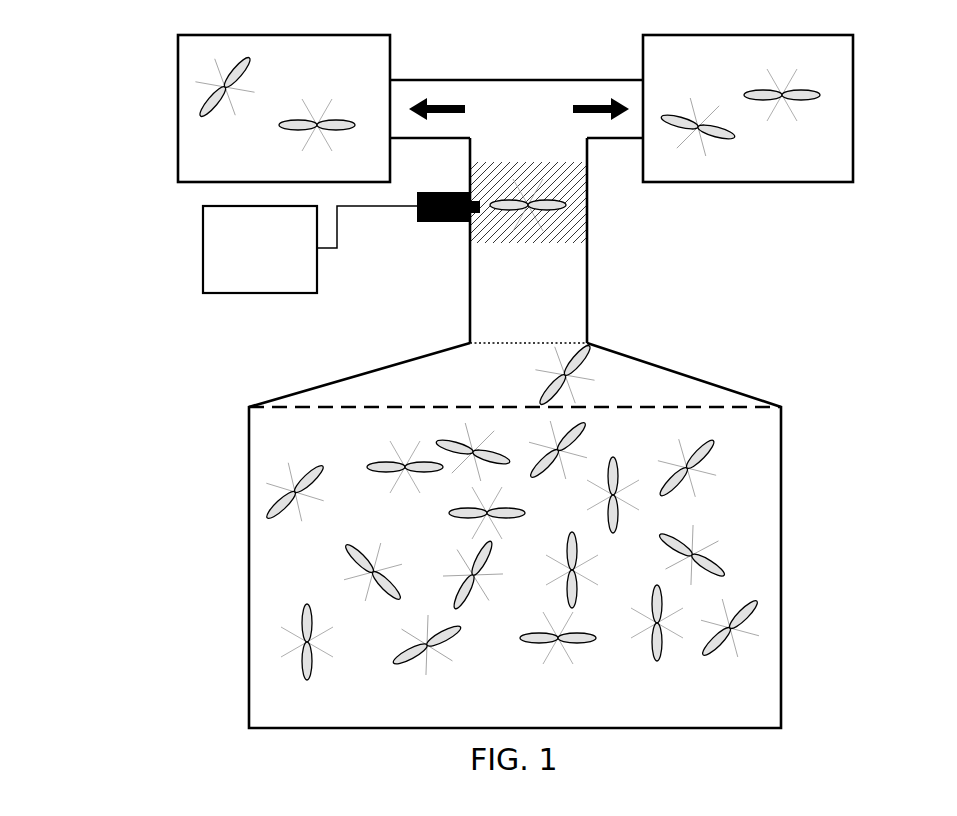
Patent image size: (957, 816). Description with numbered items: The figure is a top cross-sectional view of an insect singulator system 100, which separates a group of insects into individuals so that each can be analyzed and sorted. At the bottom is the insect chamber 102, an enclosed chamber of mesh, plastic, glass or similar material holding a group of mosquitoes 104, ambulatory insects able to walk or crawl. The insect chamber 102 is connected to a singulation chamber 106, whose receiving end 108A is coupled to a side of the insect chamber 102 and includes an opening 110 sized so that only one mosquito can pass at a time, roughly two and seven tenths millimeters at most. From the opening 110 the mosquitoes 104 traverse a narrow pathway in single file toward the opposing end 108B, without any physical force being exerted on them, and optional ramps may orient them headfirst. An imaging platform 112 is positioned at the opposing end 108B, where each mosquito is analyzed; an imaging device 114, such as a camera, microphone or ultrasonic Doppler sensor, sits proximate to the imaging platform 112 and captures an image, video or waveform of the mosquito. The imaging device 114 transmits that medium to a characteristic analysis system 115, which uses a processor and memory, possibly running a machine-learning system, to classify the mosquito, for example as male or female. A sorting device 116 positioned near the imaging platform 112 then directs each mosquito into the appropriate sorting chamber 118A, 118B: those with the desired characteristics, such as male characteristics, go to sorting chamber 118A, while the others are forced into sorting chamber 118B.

The insect singulator system 100 is at (190, 314).
The insect chamber 102 is at (781, 530).
The mosquitoes 104 is at (750, 454).
The singulation chamber 106 is at (587, 298).
The receiving end 108A is at (376, 403).
The opposing end 108B is at (483, 296).
The opening 110 is at (634, 404).
The imaging platform 112 is at (587, 218).
The imaging device 114 is at (417, 219).
The characteristic analysis system 115 is at (203, 250).
The sorting device 116 is at (514, 80).
The sorting chamber 118A is at (178, 107).
The sorting chamber 118B is at (853, 112).